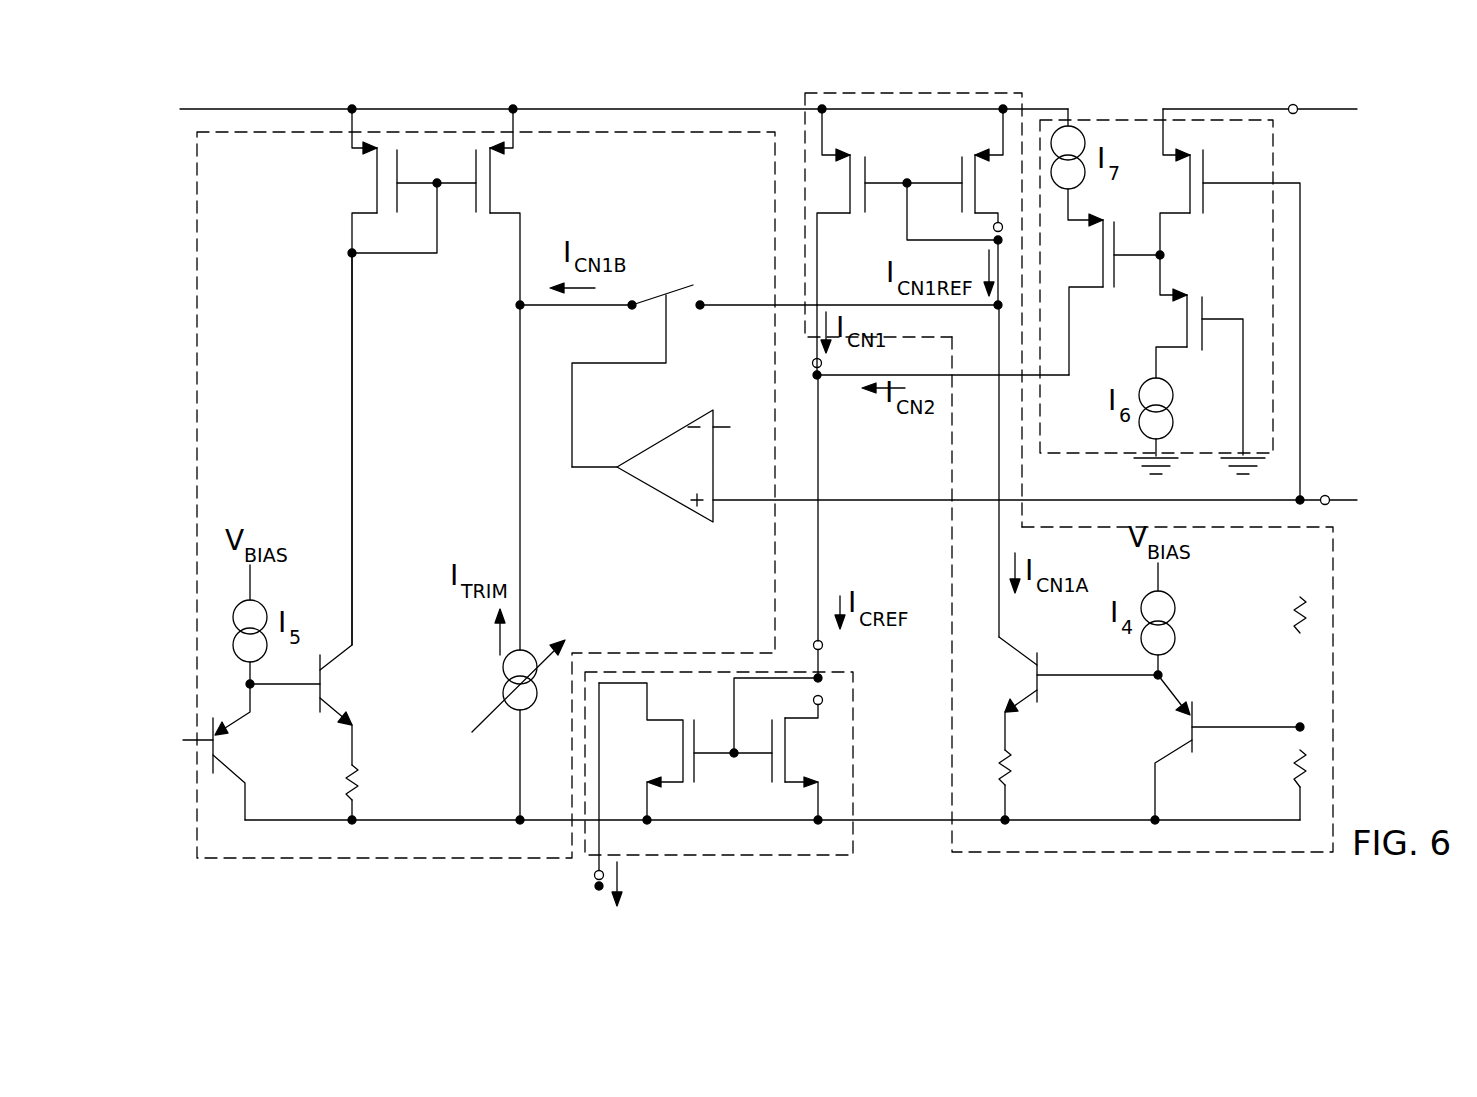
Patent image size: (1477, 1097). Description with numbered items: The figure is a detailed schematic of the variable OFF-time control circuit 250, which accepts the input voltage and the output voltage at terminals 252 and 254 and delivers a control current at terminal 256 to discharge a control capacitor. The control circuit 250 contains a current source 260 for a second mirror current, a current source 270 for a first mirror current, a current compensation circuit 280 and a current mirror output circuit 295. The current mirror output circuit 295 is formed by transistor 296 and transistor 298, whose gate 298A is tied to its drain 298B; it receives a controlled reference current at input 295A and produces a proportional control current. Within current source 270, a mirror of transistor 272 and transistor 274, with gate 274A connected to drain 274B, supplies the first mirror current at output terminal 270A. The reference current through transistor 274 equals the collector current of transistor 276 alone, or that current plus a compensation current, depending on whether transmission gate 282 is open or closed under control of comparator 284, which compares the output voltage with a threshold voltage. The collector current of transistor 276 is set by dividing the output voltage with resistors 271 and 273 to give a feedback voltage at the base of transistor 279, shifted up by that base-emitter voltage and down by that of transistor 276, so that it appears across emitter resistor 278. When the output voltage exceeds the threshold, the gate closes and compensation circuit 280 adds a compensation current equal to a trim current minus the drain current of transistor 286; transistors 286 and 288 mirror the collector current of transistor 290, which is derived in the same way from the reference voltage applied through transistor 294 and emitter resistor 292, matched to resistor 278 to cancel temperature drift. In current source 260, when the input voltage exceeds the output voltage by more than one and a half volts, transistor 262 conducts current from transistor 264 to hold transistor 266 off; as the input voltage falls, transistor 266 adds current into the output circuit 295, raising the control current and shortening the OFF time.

The OFF-time control circuit 250 is at (719, 94).
The input terminal 252 is at (1294, 104).
The input terminal 254 is at (1327, 495).
The output terminal 256 is at (595, 877).
The current source 260 is at (1100, 120).
The transistor 262 is at (1187, 214).
The transistor 264 is at (1186, 349).
The transistor 266 is at (1106, 289).
The current source 270 is at (858, 93).
The output terminal 270A is at (822, 363).
The resistor 271 is at (1298, 612).
The transistor 272 is at (852, 158).
The resistor 273 is at (1298, 774).
The transistor 274 is at (972, 212).
The gate 274A is at (960, 208).
The drain 274B is at (1001, 223).
The transistor 276 is at (1040, 700).
The emitter resistor 278 is at (1012, 768).
The transistor 279 is at (1196, 706).
The current compensation circuit 280 is at (428, 132).
The transmission gate 282 is at (673, 293).
The comparator 284 is at (630, 473).
The transistor 286 is at (490, 190).
The transistor 288 is at (377, 170).
The transistor 290 is at (330, 684).
The resistor 292 is at (362, 782).
The transistor 294 is at (216, 750).
The current mirror output circuit 295 is at (855, 850).
The input 295A is at (823, 645).
The transistor 296 is at (684, 785).
The transistor 298 is at (786, 784).
The gate 298A is at (772, 732).
The drain 298B is at (823, 700).